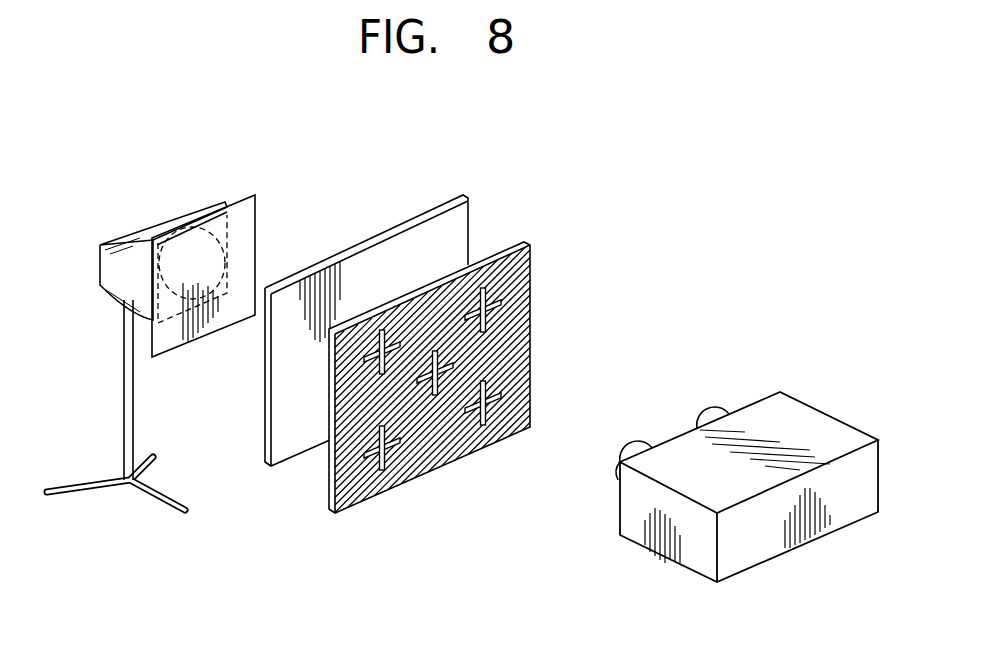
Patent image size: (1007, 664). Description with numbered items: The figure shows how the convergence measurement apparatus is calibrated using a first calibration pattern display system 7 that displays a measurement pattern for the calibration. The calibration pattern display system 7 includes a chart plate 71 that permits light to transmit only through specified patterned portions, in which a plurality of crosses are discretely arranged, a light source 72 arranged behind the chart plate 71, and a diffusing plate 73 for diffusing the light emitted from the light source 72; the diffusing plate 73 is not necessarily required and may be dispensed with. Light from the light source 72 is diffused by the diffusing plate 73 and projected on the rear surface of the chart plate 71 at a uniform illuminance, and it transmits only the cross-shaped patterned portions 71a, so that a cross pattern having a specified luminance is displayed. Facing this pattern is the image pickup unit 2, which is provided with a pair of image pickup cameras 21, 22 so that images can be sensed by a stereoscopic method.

The calibration pattern display system 7 is at (427, 160).
The chart plate 71 is at (532, 273).
The cross-shaped patterned portions 71a is at (488, 412).
The light source 72 is at (256, 220).
The diffusing plate 73 is at (468, 217).
The image pickup unit 2 is at (810, 427).
The image pickup camera 21 is at (697, 423).
The image pickup camera 22 is at (633, 450).